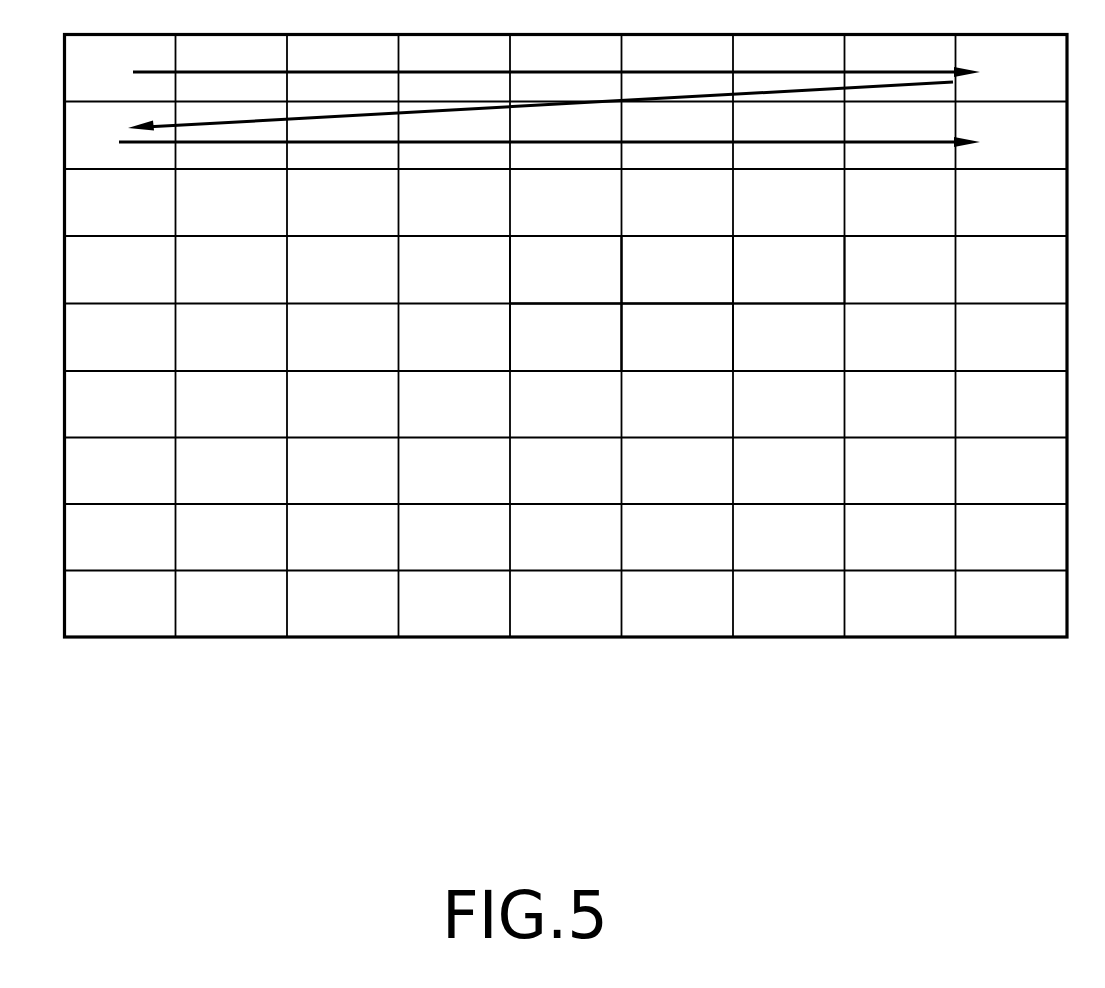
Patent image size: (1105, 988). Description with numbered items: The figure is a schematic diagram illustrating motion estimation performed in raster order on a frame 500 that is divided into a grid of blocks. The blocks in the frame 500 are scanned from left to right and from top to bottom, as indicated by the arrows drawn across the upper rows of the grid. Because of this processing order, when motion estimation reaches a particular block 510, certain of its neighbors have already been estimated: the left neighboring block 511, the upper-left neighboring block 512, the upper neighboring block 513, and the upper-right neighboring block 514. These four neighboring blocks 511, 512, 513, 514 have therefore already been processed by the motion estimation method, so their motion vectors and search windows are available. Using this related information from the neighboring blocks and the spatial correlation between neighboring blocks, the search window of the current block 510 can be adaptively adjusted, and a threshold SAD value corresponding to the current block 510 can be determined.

The frame 500 is at (258, 637).
The block 510 is at (678, 338).
The left neighboring block 511 is at (566, 338).
The upper-left neighboring block 512 is at (566, 270).
The upper neighboring block 513 is at (678, 270).
The upper-right neighboring block 514 is at (789, 270).